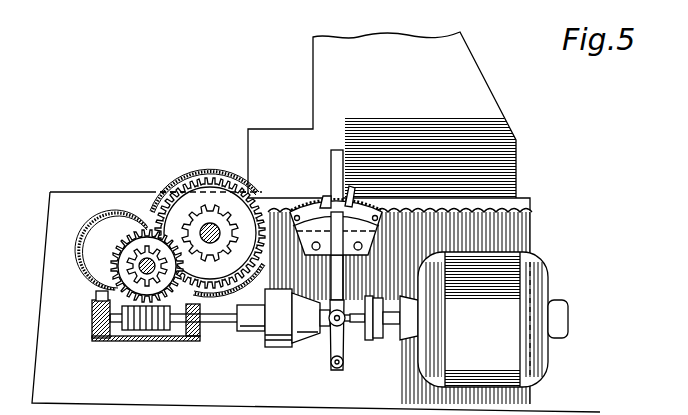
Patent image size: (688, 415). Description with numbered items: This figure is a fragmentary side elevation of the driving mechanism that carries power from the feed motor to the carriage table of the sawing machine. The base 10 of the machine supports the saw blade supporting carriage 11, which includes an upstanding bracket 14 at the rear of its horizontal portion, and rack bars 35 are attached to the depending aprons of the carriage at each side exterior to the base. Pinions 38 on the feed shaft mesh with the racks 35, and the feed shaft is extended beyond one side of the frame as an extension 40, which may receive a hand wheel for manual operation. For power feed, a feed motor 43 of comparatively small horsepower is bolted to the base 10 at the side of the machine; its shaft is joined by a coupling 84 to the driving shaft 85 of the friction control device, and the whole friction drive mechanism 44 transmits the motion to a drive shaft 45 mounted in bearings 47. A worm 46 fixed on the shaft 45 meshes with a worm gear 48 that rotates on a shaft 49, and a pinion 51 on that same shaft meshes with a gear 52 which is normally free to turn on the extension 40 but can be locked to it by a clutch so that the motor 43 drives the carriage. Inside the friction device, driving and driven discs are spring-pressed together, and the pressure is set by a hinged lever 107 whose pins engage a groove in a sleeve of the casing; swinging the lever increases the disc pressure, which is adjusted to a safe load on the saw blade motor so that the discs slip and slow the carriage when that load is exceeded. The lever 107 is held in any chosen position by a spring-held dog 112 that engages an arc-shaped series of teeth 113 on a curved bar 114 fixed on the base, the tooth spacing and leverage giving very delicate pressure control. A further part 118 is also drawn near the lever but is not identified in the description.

The base 10 is at (520, 222).
The saw blade supporting carriage 11 is at (517, 161).
The upstanding bracket 14 is at (326, 61).
The rack bars 35 is at (421, 204).
The pinions 38 is at (232, 174).
The feed shaft extension 40 is at (210, 223).
The feed motor 43 is at (537, 269).
The friction drive mechanism 44 is at (290, 346).
The drive shaft 45 is at (174, 329).
The worm 46 is at (152, 332).
The bearings 47 is at (96, 319).
The worm gear 48 is at (110, 254).
The shaft 49 is at (146, 262).
The pinion 51 is at (96, 286).
The gear 52 is at (187, 184).
The coupling 84 is at (376, 296).
The driving shaft 85 is at (353, 330).
The lever 107 is at (347, 267).
The spring-held dog 112 is at (312, 225).
The teeth 113 is at (310, 198).
The curved bar 114 is at (353, 192).
The lever 118 is at (336, 370).